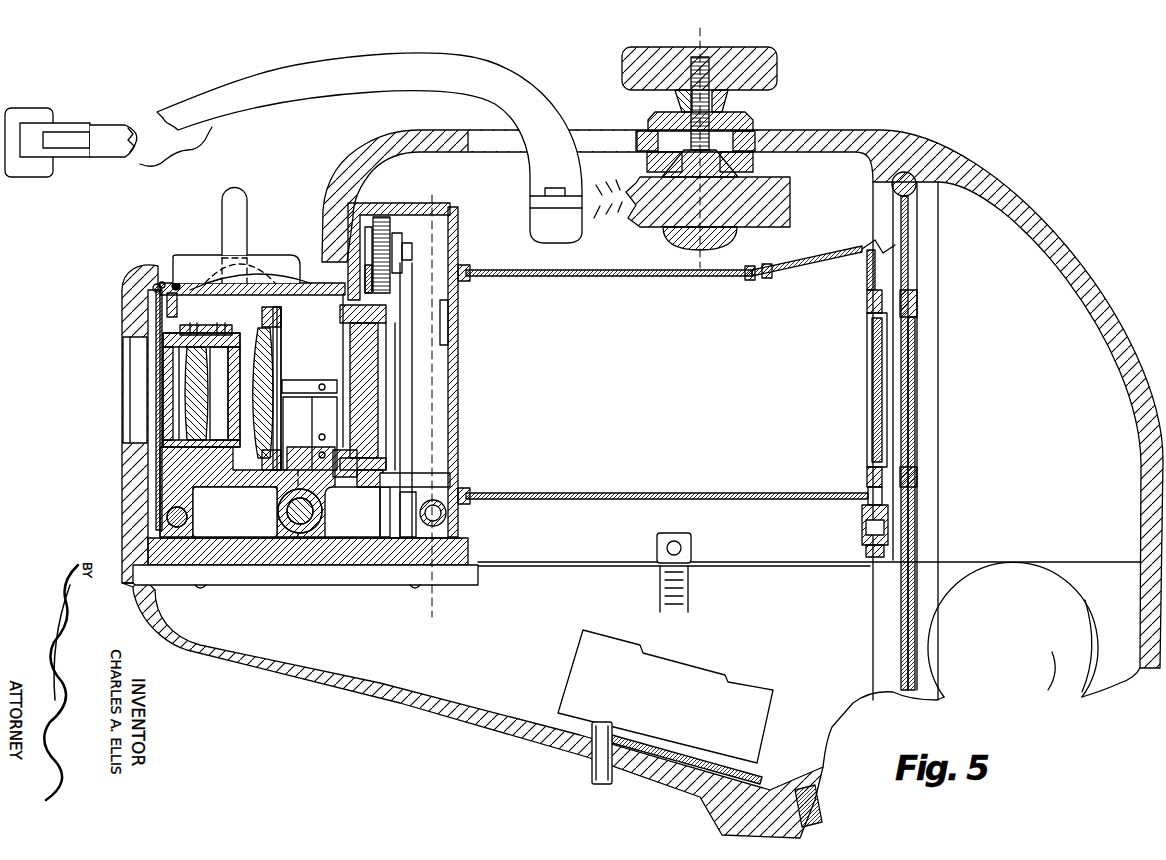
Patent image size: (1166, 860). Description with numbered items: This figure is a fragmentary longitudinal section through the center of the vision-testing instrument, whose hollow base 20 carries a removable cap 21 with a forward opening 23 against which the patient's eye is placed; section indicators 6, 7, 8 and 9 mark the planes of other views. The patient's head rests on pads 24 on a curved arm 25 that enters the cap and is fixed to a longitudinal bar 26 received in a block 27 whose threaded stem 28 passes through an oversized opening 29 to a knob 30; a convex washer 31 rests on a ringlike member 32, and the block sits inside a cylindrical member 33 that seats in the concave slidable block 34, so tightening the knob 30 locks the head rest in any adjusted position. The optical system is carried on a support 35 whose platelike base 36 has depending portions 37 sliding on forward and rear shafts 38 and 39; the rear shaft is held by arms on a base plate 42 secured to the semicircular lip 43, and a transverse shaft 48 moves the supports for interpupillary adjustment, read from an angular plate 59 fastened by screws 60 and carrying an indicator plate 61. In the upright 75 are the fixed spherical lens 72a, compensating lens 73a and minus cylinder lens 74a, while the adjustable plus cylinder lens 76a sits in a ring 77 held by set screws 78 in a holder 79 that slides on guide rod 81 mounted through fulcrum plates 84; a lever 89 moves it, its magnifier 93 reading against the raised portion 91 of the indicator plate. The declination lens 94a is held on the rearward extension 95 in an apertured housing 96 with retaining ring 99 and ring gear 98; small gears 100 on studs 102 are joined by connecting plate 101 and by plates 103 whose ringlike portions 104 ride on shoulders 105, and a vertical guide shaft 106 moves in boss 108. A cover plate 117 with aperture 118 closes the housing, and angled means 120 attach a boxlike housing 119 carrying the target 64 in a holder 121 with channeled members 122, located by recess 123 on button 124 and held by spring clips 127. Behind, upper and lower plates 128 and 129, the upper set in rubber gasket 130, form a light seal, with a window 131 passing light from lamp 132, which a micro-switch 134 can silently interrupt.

The section line 6- 6 is at (414, 183).
The section line 7- 7 is at (860, 215).
The section line 8- 8 is at (728, 22).
The section line 9 is at (323, 461).
The hollow base portion 20 is at (460, 721).
The removable cap 21 is at (1097, 270).
The spaced openings 23 is at (135, 368).
The head rest pads 24 is at (30, 122).
The curved arm 25 is at (330, 92).
The longitudinally extending bar 26 is at (791, 208).
The block 27 is at (682, 238).
The threaded stem 28 is at (711, 62).
The opening in the cap 29 is at (756, 149).
The knob 30 is at (780, 75).
The washer 31 is at (724, 108).
The ringlike member 32 is at (754, 122).
The cylindrical member 33 is at (736, 238).
The slidable block 34 is at (648, 160).
The support 35 is at (180, 477).
The platelike base portion 36 is at (247, 484).
The depending portions 37 is at (165, 528).
The forward supporting shaft 38 is at (190, 518).
The rear supporting shaft 39 is at (448, 527).
The base plate 42 is at (362, 585).
The semicircular lip 43 is at (307, 585).
The shaft 48 is at (316, 506).
The apertured angular plate 59 is at (133, 290).
The screws 60 is at (175, 283).
The indicator plate 61 is at (155, 285).
The targets 64 is at (872, 405).
The spherical lens 72a is at (165, 386).
The compensating meridianal lens 73a is at (188, 396).
The minus cylinder lens 74a is at (228, 412).
The upright portion 75 is at (190, 323).
The adjustable plus cylinder lens 76a is at (262, 345).
The encircling ring 77 is at (281, 346).
The set screws 78 is at (283, 305).
The circular holder 79 is at (283, 325).
The guide rod 81 is at (305, 380).
The fulcrum plates 84 is at (313, 414).
The lever 89 is at (225, 200).
The raised portions 91 is at (272, 282).
The transparent magnifier 93 is at (250, 273).
The declination lens 94a is at (390, 406).
The rearward extension 95 is at (460, 485).
The apertured housing 96 is at (403, 207).
The ring gear wheel 98 is at (382, 500).
The retaining ring 99 is at (340, 288).
The small gear wheels 100 is at (392, 219).
The connecting plate 101 is at (404, 232).
The studs 102 is at (412, 260).
The connecting plates 103 is at (372, 224).
The ringlike portions 104 is at (360, 488).
The shoulders 105 is at (332, 482).
The vertical guide shaft 106 is at (412, 337).
The boss 108 is at (345, 556).
The cover plate 117 is at (460, 224).
The aperture 118 is at (457, 366).
The boxlike housing 119 is at (620, 504).
The angled means 120 is at (462, 252).
The plate-like holder 121 is at (867, 325).
The channeled members 122 is at (917, 286).
The curved recess 123 is at (862, 527).
The button 124 is at (866, 550).
The spring clips 127 is at (848, 256).
The upper plate 128 is at (909, 260).
The lower plate 129 is at (900, 632).
The rubber gasket 130 is at (893, 189).
The window 131 is at (918, 388).
The lamp 132 is at (1027, 680).
The micro-switch 134 is at (586, 672).